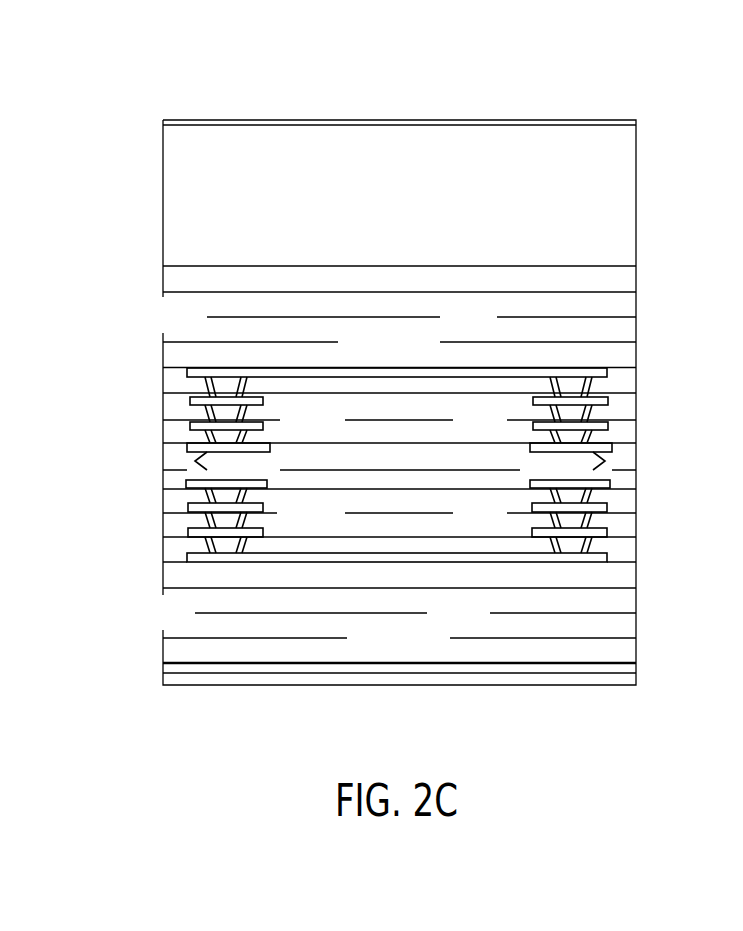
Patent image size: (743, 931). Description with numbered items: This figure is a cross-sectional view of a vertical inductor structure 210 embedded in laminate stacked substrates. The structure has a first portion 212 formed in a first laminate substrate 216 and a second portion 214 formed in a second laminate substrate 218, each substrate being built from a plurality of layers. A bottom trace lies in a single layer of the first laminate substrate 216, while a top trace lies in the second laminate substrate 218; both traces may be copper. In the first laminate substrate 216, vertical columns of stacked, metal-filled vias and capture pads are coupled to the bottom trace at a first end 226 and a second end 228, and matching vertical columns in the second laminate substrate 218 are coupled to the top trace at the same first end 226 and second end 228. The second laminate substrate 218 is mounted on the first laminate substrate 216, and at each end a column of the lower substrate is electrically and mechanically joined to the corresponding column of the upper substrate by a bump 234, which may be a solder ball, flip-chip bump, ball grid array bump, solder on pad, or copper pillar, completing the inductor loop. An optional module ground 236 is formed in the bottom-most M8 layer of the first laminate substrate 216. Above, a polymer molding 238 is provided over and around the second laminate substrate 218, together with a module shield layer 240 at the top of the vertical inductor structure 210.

The vertical inductor structure 210 is at (533, 82).
The module shield layer 240 is at (233, 120).
The molding 238 is at (615, 205).
The second laminate substrate 218 is at (187, 282).
The second portion 214 is at (648, 350).
The first end 226 is at (149, 347).
The second end 228 is at (648, 418).
The bump 234 is at (197, 465).
The first portion 212 is at (649, 556).
The first laminate substrate 216 is at (625, 655).
The module ground 236 is at (298, 668).